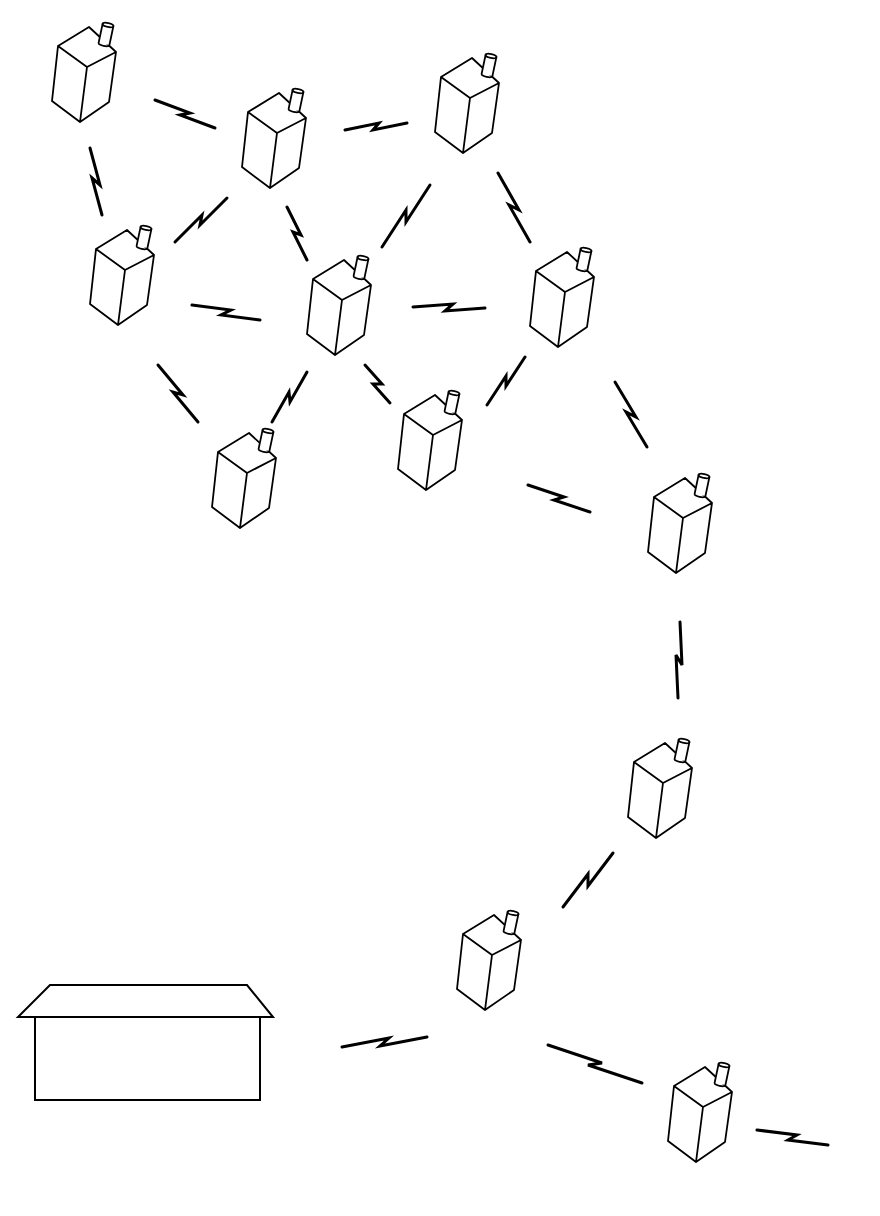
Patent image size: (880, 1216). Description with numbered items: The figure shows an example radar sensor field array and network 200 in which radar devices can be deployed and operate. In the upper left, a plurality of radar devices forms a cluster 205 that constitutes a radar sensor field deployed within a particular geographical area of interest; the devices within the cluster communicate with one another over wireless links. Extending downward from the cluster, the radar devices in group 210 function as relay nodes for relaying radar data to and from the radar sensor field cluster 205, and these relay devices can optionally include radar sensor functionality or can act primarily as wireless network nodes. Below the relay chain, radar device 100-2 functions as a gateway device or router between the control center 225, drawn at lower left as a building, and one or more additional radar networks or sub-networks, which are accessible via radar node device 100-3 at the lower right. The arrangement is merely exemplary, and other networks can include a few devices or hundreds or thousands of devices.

The mesh network system 200 is at (751, 120).
The radar sensor field cluster 205 is at (55, 515).
The relay node group 210 is at (592, 535).
The gateway radar device 100-2 is at (480, 924).
The radar node device 100-3 is at (702, 1065).
The control center 225 is at (173, 983).